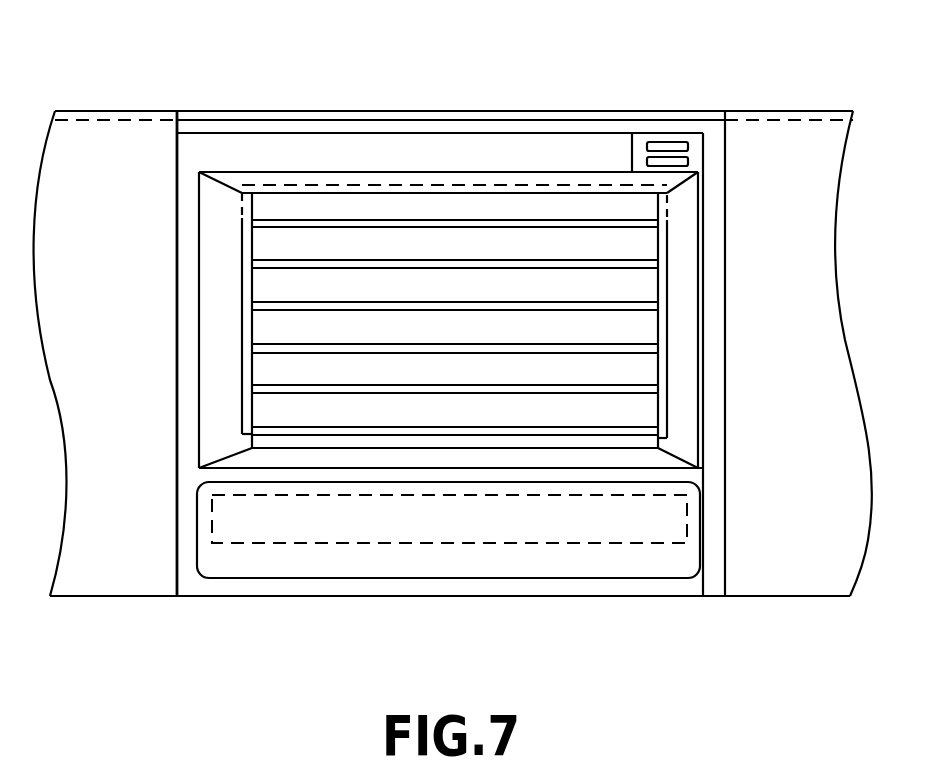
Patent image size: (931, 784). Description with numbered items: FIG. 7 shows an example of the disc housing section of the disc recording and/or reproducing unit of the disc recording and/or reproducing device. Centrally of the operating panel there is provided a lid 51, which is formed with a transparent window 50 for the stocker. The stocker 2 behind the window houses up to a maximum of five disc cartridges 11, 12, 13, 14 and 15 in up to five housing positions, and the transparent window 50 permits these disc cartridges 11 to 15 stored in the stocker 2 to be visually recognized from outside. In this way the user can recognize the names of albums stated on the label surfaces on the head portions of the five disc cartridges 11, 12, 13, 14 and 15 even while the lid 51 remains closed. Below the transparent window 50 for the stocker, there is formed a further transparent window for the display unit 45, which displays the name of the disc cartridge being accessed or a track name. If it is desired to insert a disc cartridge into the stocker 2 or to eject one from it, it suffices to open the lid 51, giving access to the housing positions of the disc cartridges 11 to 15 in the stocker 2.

The stocker 2 is at (454, 249).
The disc cartridge 11 is at (455, 239).
The disc cartridge 12 is at (455, 280).
The disc cartridge 13 is at (455, 322).
The disc cartridge 14 is at (455, 364).
The disc cartridge 15 is at (455, 405).
The display unit 45 is at (480, 530).
The transparent window 50 is at (312, 192).
The lid 51 is at (570, 173).